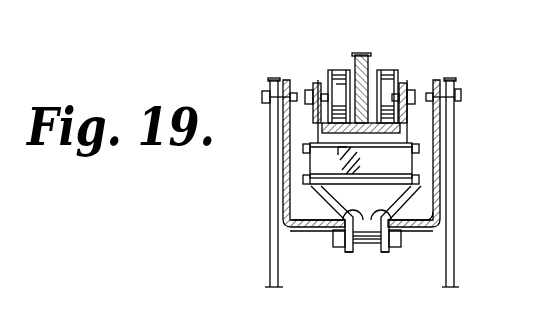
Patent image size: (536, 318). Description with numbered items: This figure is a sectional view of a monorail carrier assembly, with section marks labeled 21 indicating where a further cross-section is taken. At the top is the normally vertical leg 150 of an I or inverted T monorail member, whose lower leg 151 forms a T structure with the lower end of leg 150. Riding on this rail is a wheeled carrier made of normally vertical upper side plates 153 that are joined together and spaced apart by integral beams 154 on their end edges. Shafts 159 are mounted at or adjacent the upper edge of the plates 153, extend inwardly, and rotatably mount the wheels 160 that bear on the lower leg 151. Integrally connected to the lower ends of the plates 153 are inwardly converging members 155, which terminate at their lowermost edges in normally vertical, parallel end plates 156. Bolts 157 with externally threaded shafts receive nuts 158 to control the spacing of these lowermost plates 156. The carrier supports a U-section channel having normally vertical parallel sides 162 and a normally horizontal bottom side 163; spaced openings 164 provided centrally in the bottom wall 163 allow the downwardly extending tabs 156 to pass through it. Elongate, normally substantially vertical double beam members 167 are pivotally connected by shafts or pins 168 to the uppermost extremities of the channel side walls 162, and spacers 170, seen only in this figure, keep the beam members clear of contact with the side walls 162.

The normally vertical leg 150 is at (368, 53).
The lower leg 151 is at (400, 131).
The upper side plates 153 is at (306, 91).
The integral beams 154 is at (410, 157).
The inwardly converging members 155 is at (320, 205).
The end plates 156 is at (347, 252).
The bolts 157 is at (334, 240).
The nuts 158 is at (390, 248).
The shafts 159 is at (329, 72).
The wheels 160 is at (338, 82).
The channel sides 162 is at (285, 175).
The bottom side 163 is at (436, 202).
The spaced openings 164 is at (289, 233).
The beam members 167 is at (270, 271).
The shafts or pins 168 is at (263, 96).
The spacers 170 is at (276, 79).
The section line 21- 21 is at (336, 195).